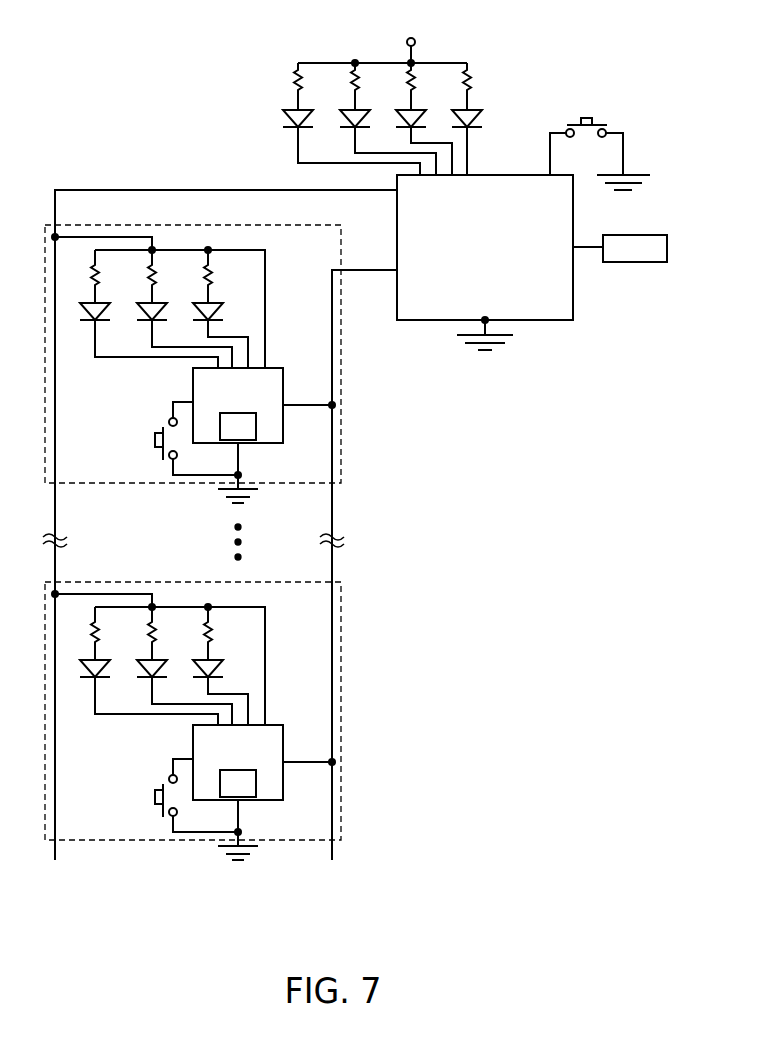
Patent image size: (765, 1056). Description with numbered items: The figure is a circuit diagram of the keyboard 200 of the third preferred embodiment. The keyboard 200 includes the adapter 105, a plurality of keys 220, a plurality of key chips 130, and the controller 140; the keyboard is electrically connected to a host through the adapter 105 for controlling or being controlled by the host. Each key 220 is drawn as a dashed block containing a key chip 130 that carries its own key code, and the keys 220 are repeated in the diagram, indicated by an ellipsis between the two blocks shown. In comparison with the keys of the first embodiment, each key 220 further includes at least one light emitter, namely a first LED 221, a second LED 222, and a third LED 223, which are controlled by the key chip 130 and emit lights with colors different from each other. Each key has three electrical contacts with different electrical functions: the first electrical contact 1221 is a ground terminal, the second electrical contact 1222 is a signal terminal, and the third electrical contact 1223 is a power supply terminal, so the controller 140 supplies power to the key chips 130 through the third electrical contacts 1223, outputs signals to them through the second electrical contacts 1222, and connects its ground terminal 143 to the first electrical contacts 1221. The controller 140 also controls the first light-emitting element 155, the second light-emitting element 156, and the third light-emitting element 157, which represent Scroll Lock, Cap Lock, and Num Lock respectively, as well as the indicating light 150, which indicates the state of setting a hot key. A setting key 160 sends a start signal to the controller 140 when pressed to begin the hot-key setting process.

The keyboard 200 is at (190, 48).
The third light-emitting element 157 is at (315, 106).
The second light-emitting element 156 is at (372, 106).
The first light-emitting element 155 is at (428, 106).
The indicating light 150 is at (484, 106).
The setting key 160 is at (638, 139).
The controller 140 is at (485, 247).
The ground terminal 143 is at (485, 320).
The adapter 105 is at (620, 248).
The third electrical contact 1223 is at (55, 237).
The second electrical contact 1222 is at (332, 405).
The first electrical contact 1221 is at (240, 475).
The key 220 is at (215, 542).
The third LED 223 is at (104, 297).
The second LED 222 is at (161, 297).
The first LED 221 is at (217, 297).
The key chip 130 is at (262, 405).